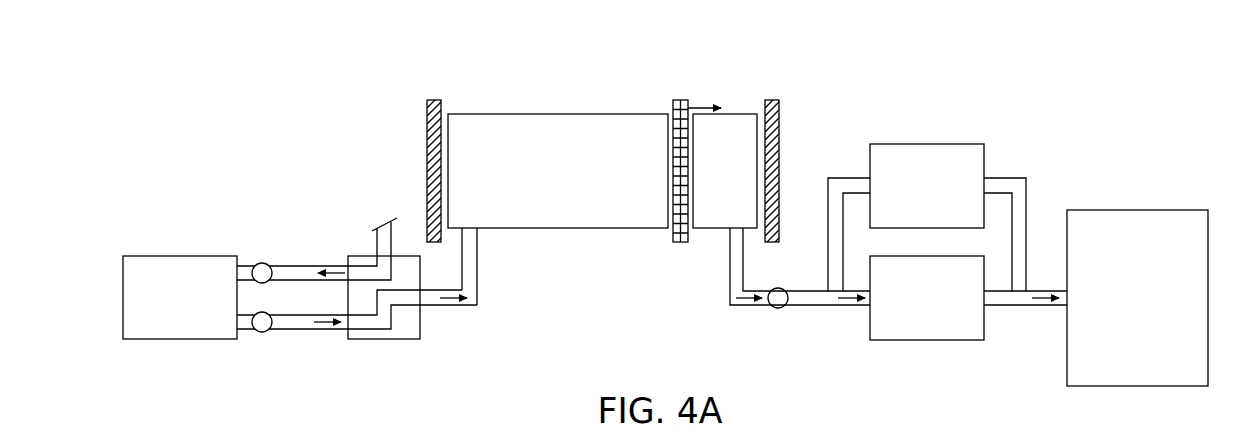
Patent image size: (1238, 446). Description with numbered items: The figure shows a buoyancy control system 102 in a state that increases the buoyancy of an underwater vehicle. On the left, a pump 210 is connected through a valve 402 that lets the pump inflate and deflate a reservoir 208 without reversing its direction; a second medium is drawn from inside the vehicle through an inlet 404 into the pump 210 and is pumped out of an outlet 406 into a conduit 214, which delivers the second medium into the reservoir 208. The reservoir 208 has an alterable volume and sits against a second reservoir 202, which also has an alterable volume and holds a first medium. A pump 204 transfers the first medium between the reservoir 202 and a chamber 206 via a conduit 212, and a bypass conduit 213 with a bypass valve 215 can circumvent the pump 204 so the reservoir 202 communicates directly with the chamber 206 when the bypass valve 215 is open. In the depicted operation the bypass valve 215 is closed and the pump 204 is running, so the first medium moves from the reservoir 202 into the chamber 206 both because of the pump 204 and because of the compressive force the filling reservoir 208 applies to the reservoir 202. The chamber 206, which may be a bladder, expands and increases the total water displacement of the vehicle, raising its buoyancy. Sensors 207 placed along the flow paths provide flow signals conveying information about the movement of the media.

The buoyancy control system 102 is at (1085, 83).
The reservoir 202 is at (708, 191).
The pump 204 is at (910, 322).
The chamber 206 is at (1121, 322).
The sensor 207 is at (257, 264).
The reservoir 208 is at (541, 191).
The pump 210 is at (163, 322).
The conduit 212 is at (742, 305).
The bypass conduit 213 is at (857, 177).
The conduit 214 is at (447, 307).
The bypass valve 215 is at (910, 218).
The valve 402 is at (397, 340).
The inlet 404 is at (328, 265).
The outlet 406 is at (327, 332).